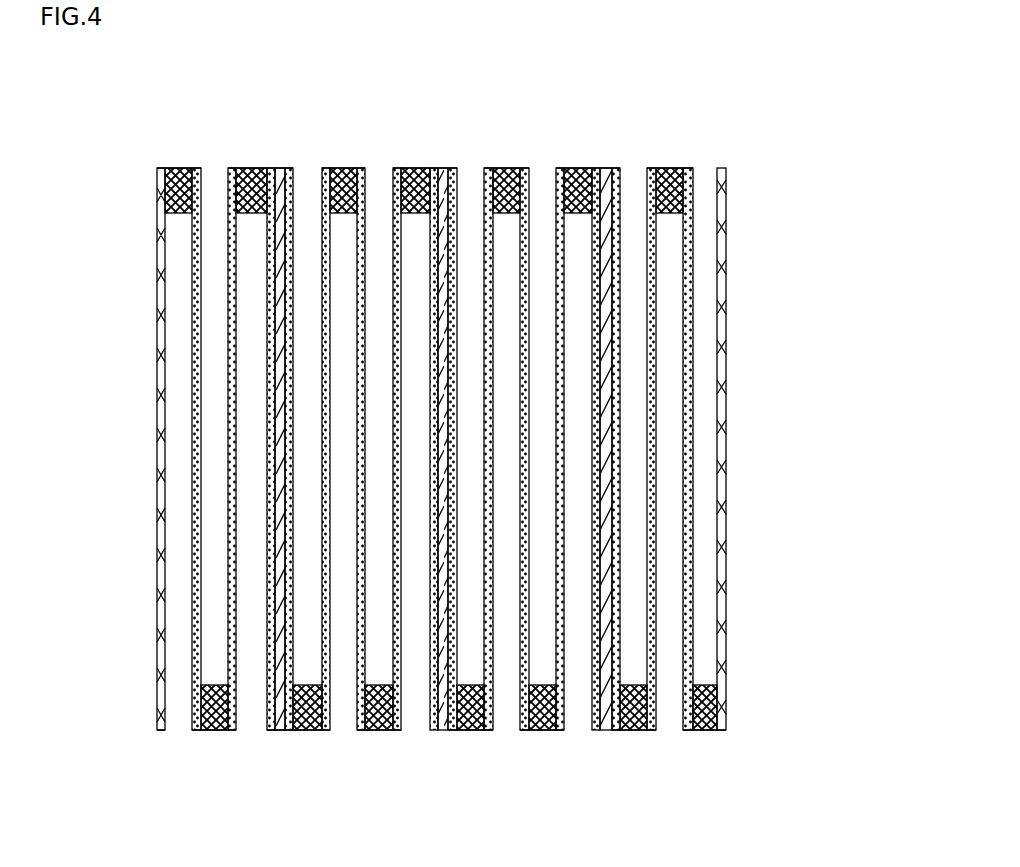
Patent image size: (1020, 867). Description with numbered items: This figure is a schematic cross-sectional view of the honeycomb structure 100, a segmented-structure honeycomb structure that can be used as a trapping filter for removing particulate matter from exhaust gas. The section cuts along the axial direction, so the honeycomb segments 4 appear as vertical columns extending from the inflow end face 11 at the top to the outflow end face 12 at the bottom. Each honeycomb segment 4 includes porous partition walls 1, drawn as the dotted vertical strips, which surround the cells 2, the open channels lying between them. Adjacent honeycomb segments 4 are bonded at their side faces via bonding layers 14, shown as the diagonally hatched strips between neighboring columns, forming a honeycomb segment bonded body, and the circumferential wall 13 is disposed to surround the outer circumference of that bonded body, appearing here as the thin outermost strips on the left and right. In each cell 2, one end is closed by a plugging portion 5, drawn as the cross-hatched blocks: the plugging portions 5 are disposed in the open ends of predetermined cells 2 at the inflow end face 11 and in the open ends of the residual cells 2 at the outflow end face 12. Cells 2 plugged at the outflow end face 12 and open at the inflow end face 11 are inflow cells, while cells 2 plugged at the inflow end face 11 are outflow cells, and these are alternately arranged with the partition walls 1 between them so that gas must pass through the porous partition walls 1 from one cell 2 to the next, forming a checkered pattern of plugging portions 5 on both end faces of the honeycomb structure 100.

The partition wall 1 is at (532, 178).
The cell 2 is at (510, 168).
The honeycomb segment 4 is at (703, 155).
The plugging portion 5 is at (347, 168).
The inflow end face 11 is at (213, 128).
The outflow end face 12 is at (222, 760).
The circumferential wall 13 is at (721, 403).
The bonding layer 14 is at (446, 168).
The honeycomb structure 100 is at (745, 89).